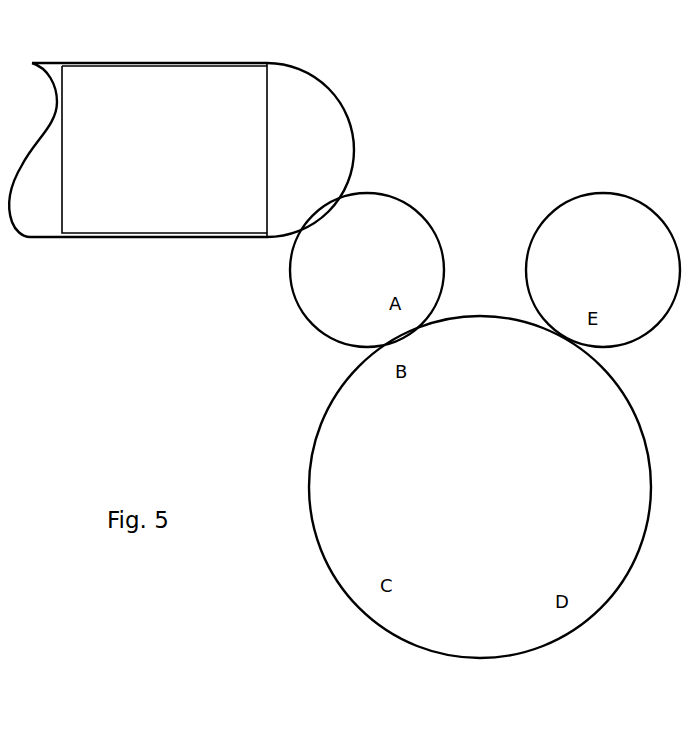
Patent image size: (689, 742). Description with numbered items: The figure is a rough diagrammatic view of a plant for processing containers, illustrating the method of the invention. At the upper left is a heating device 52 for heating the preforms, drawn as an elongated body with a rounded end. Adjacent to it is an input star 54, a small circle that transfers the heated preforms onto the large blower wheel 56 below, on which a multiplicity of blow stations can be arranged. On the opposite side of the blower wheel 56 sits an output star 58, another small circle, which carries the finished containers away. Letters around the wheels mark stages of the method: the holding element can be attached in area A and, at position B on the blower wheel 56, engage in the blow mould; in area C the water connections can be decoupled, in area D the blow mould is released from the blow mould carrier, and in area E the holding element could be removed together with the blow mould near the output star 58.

The heating device 52 is at (213, 112).
The input star 54 is at (343, 278).
The blower wheel 56 is at (468, 603).
The output star 58 is at (628, 230).